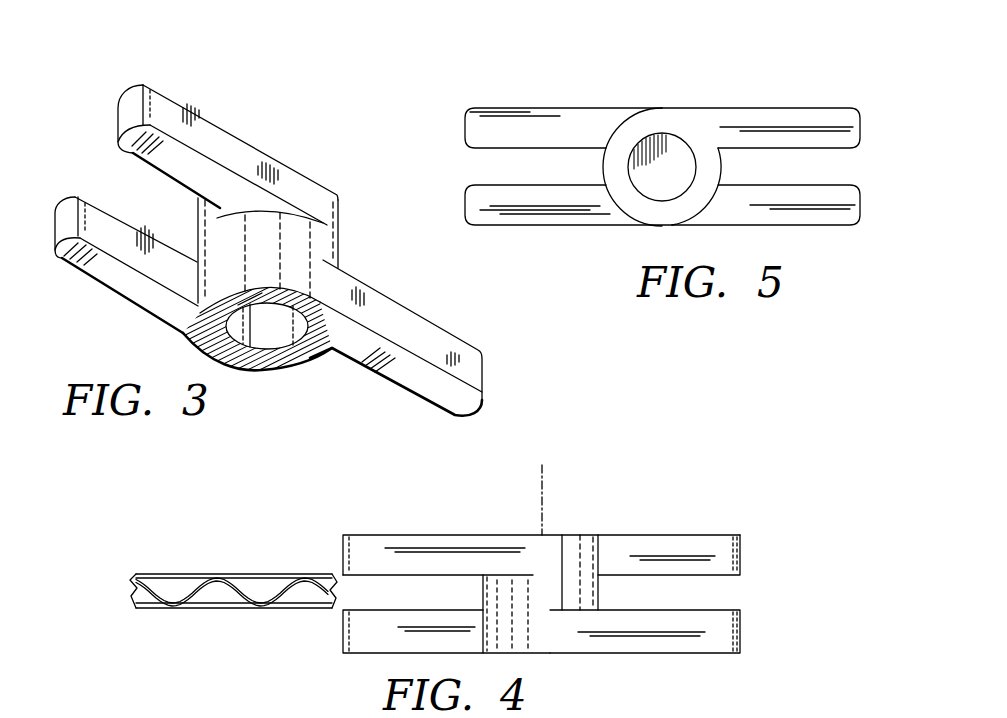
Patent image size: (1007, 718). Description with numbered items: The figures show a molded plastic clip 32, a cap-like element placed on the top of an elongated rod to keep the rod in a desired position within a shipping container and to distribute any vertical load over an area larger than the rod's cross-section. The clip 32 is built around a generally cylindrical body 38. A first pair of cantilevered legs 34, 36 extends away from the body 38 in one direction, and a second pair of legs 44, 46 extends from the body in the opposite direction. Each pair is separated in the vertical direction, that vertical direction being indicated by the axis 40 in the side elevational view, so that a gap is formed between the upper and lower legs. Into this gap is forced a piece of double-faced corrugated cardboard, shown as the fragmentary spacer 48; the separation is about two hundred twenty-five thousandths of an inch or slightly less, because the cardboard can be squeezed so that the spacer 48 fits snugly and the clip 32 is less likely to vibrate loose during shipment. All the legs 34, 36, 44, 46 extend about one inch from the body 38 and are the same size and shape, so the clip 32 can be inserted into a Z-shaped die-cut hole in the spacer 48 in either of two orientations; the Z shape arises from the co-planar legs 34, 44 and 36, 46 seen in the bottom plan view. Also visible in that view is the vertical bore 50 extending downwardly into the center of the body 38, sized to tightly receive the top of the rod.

In FIG. 3, the clip 32 is at (310, 164).
In FIG. 5, the clip 32 is at (657, 104).
In FIG. 4, the clip 32 is at (622, 518).
In FIG. 3, the cantilevered leg 34 is at (465, 405).
In FIG. 5, the cantilevered leg 34 is at (858, 137).
In FIG. 4, the cantilevered leg 34 is at (738, 617).
In FIG. 5, the cantilevered leg 36 is at (861, 216).
In FIG. 4, the cantilevered leg 36 is at (741, 545).
In FIG. 3, the generally cylindrical body 38 is at (338, 242).
In FIG. 5, the generally cylindrical body 38 is at (710, 168).
In FIG. 4, the generally cylindrical body 38 is at (590, 596).
In FIG. 4, the axis 40 is at (545, 513).
In FIG. 3, the leg 44 is at (73, 268).
In FIG. 5, the leg 44 is at (467, 203).
In FIG. 4, the leg 44 is at (353, 640).
In FIG. 3, the leg 46 is at (127, 108).
In FIG. 5, the leg 46 is at (465, 118).
In FIG. 4, the leg 46 is at (357, 553).
In FIG. 4, the spacer 48 is at (188, 573).
In FIG. 3, the vertical bore 50 is at (278, 338).
In FIG. 5, the vertical bore 50 is at (650, 192).